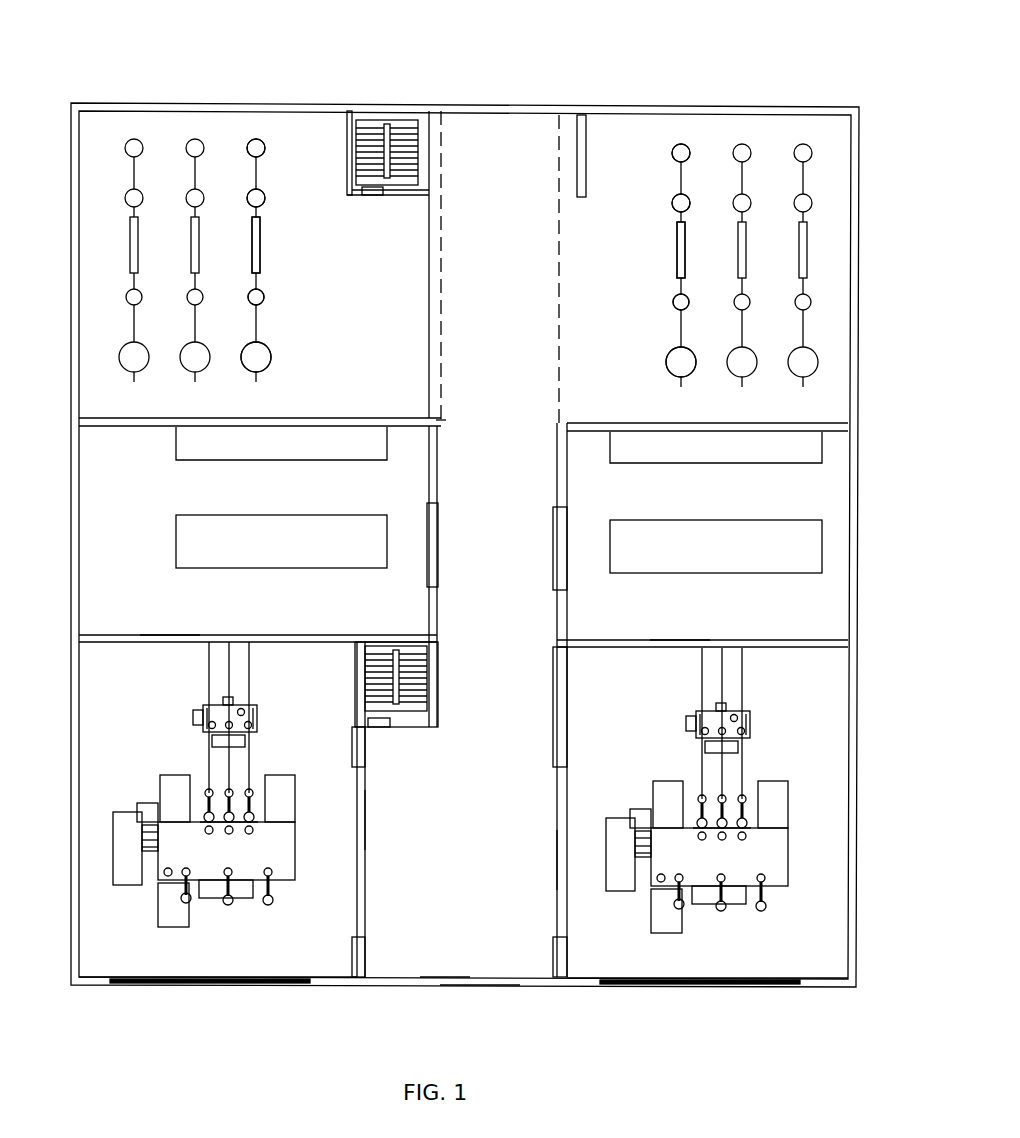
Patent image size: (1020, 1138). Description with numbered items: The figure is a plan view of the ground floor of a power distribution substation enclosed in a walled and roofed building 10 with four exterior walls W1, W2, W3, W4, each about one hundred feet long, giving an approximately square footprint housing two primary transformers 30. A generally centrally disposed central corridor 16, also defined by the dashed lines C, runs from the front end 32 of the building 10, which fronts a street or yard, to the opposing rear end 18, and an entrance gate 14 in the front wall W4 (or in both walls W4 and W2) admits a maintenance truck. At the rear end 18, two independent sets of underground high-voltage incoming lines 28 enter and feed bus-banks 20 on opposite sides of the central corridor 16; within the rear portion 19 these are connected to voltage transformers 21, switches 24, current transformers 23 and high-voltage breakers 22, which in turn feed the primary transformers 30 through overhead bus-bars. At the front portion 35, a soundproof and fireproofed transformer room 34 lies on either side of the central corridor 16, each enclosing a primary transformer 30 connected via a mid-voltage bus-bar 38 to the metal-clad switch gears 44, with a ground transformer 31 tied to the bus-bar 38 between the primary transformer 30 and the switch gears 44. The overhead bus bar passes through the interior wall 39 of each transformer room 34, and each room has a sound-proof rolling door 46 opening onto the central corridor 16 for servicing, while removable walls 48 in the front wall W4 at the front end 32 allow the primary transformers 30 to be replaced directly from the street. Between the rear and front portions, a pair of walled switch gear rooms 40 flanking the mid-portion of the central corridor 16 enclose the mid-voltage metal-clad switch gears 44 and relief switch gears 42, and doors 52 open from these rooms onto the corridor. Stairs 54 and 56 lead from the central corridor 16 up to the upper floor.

The building 10 is at (862, 124).
The entrance gate 14 is at (483, 986).
The central corridor 16 is at (510, 637).
The rear end 18 is at (511, 112).
The rear portion 19 is at (416, 250).
The bus-banks 20 is at (134, 322).
The voltage transformers 21 is at (265, 200).
The breakers 22 is at (271, 357).
The current transformers 23 is at (264, 297).
The switches 24 is at (260, 252).
The incoming lines 28 is at (265, 148).
The primary transformers 30 is at (291, 857).
The ground transformer 31 is at (258, 716).
The front end 32 is at (445, 976).
The transformer rooms 34 is at (126, 964).
The front portion 35 is at (418, 964).
The mid-voltage bus-bar 38 is at (209, 660).
The interior wall 39 is at (167, 636).
The switch gear rooms 40 is at (129, 624).
The relief switch gears 42 is at (176, 448).
The metal-clad switch gears 44 is at (176, 535).
The rolling door 46 is at (365, 820).
The removable walls 48 is at (195, 985).
The doors 52 is at (557, 529).
The stairs 54 is at (366, 118).
The stairs 56 is at (418, 652).
The exterior wall W1 is at (68, 500).
The exterior wall W2 is at (537, 107).
The exterior wall W3 is at (860, 528).
The front wall W4 is at (316, 986).
The dashed lines C is at (497, 297).